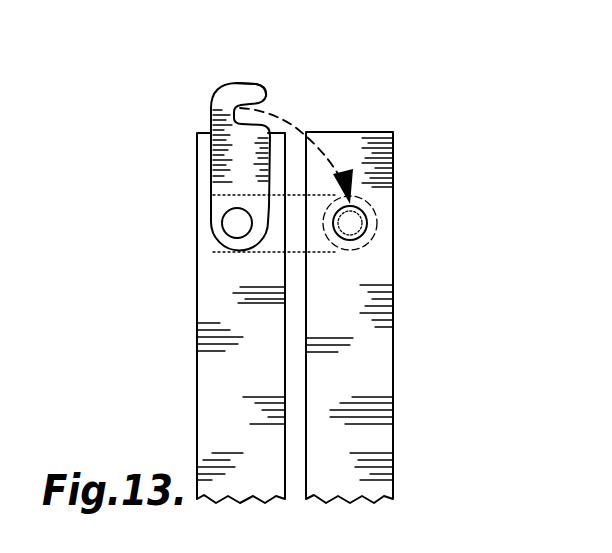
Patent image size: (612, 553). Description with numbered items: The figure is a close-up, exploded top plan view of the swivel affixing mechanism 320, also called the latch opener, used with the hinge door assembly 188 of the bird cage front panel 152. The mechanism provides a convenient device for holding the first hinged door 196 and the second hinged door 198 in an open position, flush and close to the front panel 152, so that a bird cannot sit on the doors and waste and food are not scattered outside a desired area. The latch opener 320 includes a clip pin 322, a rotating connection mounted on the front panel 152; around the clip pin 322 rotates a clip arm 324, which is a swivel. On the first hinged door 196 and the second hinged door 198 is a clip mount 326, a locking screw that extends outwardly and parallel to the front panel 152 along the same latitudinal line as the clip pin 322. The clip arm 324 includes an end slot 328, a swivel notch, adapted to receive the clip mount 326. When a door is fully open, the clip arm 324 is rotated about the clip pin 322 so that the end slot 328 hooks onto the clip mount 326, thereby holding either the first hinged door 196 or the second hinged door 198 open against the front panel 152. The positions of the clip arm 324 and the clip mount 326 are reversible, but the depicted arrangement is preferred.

The front panel 152 is at (208, 300).
The hinge door assembly 188 is at (210, 112).
The first hinged door 196 is at (387, 307).
The second hinged door 198 is at (397, 309).
The swivel affixing mechanism 320 is at (388, 112).
The clip pin 322 is at (222, 225).
The clip arm 324 is at (212, 158).
The clip mount 326 is at (367, 221).
The end slot 328 is at (243, 90).